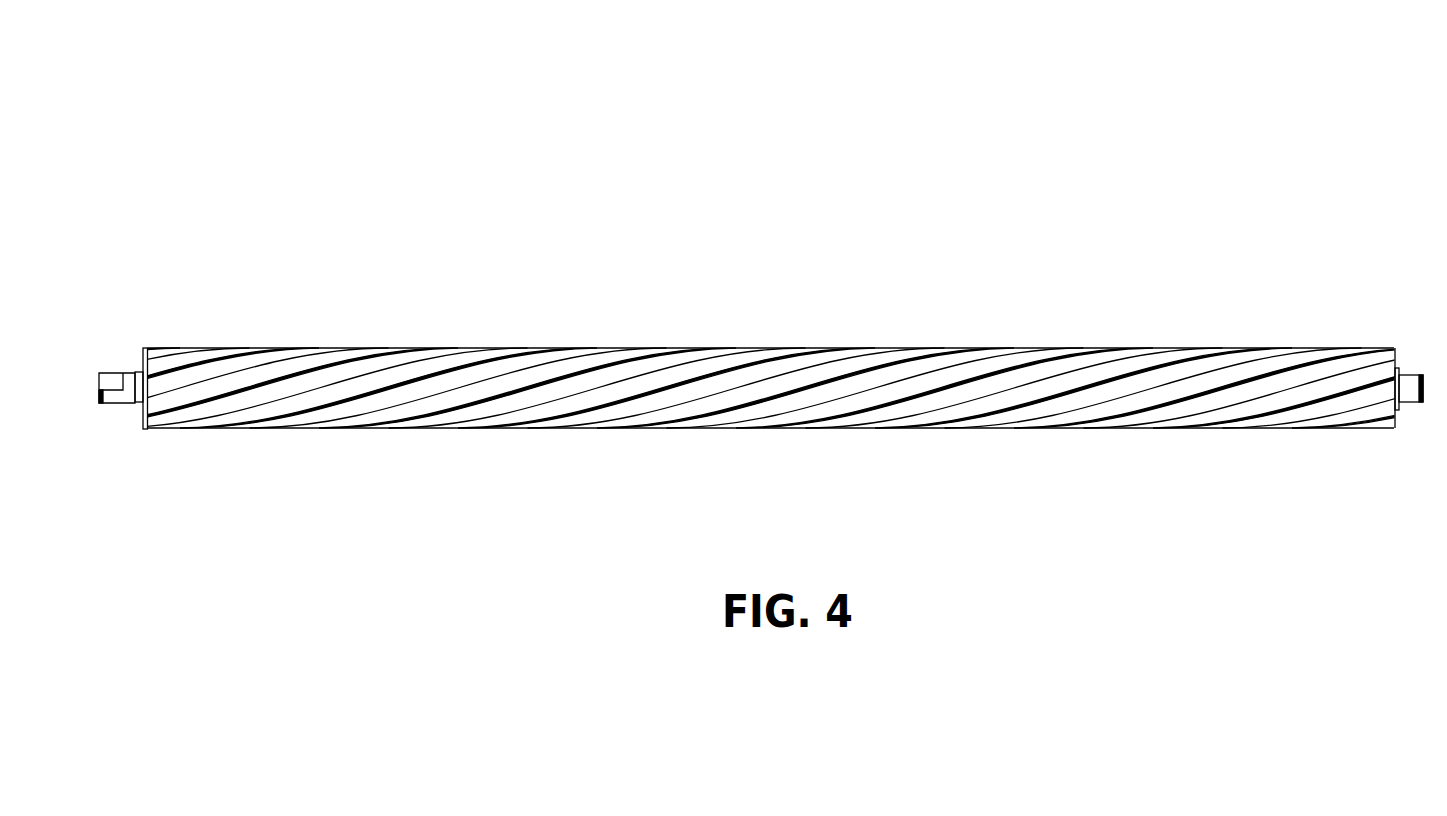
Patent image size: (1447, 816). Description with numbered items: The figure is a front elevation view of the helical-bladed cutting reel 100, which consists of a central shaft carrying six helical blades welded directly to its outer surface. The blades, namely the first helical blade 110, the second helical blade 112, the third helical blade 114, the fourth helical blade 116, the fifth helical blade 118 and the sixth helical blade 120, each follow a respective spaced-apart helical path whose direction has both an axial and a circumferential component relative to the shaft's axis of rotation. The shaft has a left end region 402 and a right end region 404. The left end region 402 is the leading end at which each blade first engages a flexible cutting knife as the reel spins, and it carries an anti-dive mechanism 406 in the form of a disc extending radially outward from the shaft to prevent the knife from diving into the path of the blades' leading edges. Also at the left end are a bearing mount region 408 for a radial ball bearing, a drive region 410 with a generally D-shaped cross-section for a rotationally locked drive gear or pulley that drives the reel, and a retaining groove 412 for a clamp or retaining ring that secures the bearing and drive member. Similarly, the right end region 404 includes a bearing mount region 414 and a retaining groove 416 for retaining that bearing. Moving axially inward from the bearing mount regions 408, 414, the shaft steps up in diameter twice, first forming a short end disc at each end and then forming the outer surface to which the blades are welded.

The helical-bladed cutting reel 100 is at (1213, 93).
The first helical blade 110 is at (217, 422).
The second helical blade 112 is at (903, 422).
The third helical blade 114 is at (757, 422).
The fourth helical blade 116 is at (627, 422).
The fifth helical blade 118 is at (487, 422).
The sixth helical blade 120 is at (343, 422).
The left end region 402 is at (138, 427).
The right end region 404 is at (1385, 424).
The anti-dive mechanism 406 is at (143, 430).
The bearing mount region 408 is at (129, 373).
The drive region 410 is at (113, 373).
The retaining groove 412 is at (107, 426).
The bearing mount region 414 is at (1411, 396).
The retaining groove 416 is at (1420, 373).